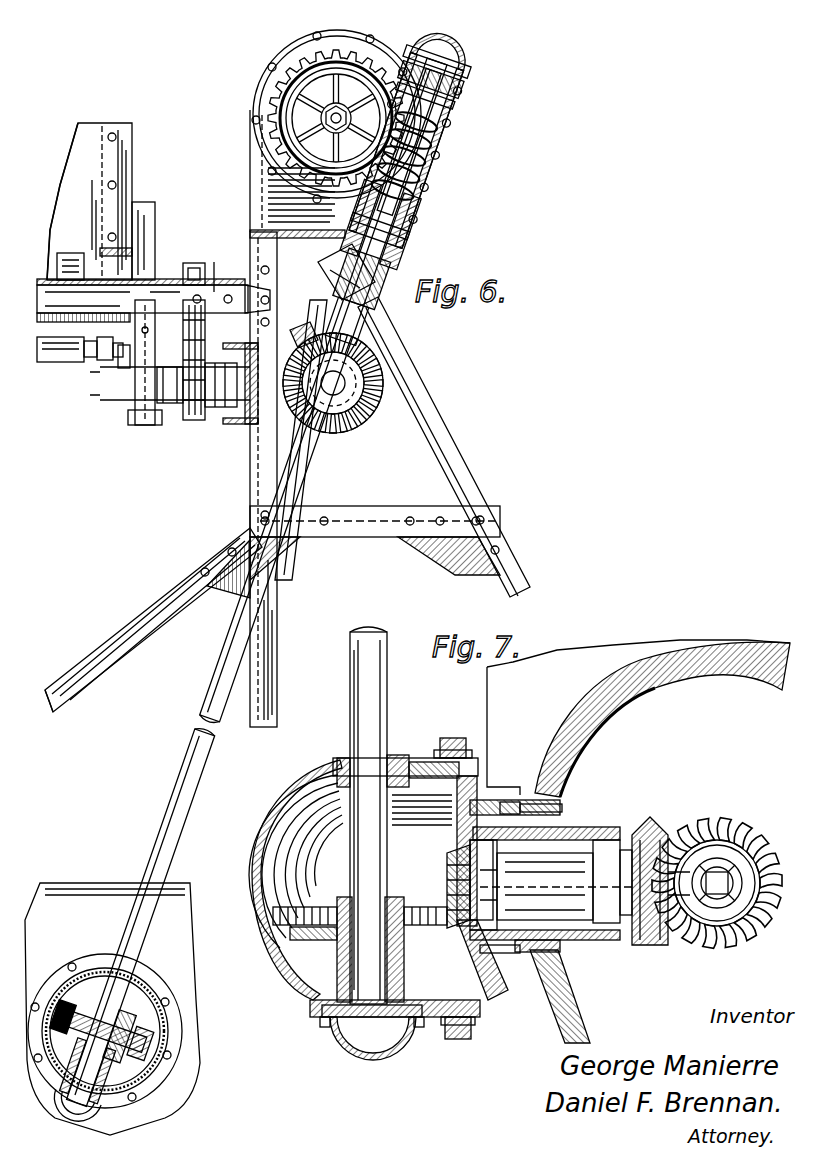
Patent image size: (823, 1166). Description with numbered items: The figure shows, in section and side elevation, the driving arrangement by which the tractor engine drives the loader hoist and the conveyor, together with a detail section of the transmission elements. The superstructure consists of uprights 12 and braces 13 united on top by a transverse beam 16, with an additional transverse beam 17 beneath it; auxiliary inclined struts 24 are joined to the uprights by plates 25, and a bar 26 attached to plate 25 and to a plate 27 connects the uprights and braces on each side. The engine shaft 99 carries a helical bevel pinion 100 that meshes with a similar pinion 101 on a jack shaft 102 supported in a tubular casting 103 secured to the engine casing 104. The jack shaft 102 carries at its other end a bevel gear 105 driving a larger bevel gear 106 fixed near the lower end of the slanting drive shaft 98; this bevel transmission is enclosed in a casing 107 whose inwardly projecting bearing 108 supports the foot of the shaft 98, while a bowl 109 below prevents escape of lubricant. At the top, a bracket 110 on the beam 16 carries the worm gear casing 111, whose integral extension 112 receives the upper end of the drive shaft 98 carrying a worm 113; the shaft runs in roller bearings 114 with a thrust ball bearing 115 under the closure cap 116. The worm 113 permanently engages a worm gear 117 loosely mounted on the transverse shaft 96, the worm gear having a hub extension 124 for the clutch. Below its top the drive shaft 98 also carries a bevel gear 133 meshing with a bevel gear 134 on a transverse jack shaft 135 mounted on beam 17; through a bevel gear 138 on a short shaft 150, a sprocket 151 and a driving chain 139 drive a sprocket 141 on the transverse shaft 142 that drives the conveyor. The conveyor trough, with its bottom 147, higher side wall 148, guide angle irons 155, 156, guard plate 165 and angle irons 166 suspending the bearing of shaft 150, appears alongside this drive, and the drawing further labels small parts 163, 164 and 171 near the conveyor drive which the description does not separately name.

In FIG. 6, the uprights 12 is at (250, 507).
In FIG. 6, the braces 13 is at (522, 586).
In FIG. 6, the transverse beam 16 is at (322, 234).
In FIG. 6, the transverse beam 17 is at (240, 426).
In FIG. 6, the inclined struts 24 is at (153, 630).
In FIG. 6, the plate 25 is at (288, 550).
In FIG. 6, the bar 26 is at (362, 538).
In FIG. 6, the plate 27 is at (434, 540).
In FIG. 6, the transverse shaft 96 is at (348, 104).
In FIG. 6, the drive shaft 98 is at (176, 792).
In FIG. 7, the drive shaft 98 is at (350, 727).
In FIG. 7, the engine shaft 99 is at (720, 828).
In FIG. 7, the helical bevel pinion 100 is at (700, 840).
In FIG. 7, the pinion 101 is at (661, 863).
In FIG. 7, the jack shaft 102 is at (578, 833).
In FIG. 7, the tubular casting 103 is at (596, 835).
In FIG. 7, the engine casing 104 is at (562, 806).
In FIG. 6, the bevel gear 105 is at (115, 1038).
In FIG. 7, the bevel gear 105 is at (450, 865).
In FIG. 6, the bevel gear 106 is at (118, 1057).
In FIG. 7, the bevel gear 106 is at (440, 905).
In FIG. 6, the casing 107 is at (168, 1034).
In FIG. 7, the casing 107 is at (278, 964).
In FIG. 6, the bearing 108 is at (130, 1082).
In FIG. 7, the bearing 108 is at (338, 968).
In FIG. 6, the bowl 109 is at (82, 1117).
In FIG. 7, the bowl 109 is at (333, 1037).
In FIG. 6, the bracket 110 is at (250, 180).
In FIG. 6, the worm gear casing 111 is at (262, 155).
In FIG. 6, the extension 112 is at (452, 148).
In FIG. 6, the worm 113 is at (440, 163).
In FIG. 6, the roller bearings 114 is at (466, 92).
In FIG. 6, the thrust ball bearing 115 is at (472, 72).
In FIG. 6, the closure cap 116 is at (458, 42).
In FIG. 6, the worm gear 117 is at (265, 94).
In FIG. 6, the hub extension 124 is at (290, 126).
In FIG. 6, the bevel gear 133 is at (372, 350).
In FIG. 6, the bevel gear 134 is at (384, 368).
In FIG. 6, the jack shaft 135 is at (393, 386).
In FIG. 6, the bevel gear 138 is at (303, 333).
In FIG. 6, the driving chain 139 is at (186, 420).
In FIG. 6, the sprocket 141 is at (235, 276).
In FIG. 6, the transverse shaft 142 is at (168, 366).
In FIG. 6, the bottom 147 is at (55, 287).
In FIG. 6, the side wall 148 is at (133, 160).
In FIG. 6, the short shaft 150 is at (220, 408).
In FIG. 6, the sprocket 151 is at (172, 405).
In FIG. 6, the angle iron 155 is at (108, 251).
In FIG. 6, the angle iron 156 is at (140, 282).
In FIG. 6, the nut 163 is at (90, 350).
In FIG. 6, the clamp 164 is at (53, 316).
In FIG. 6, the guard plate 165 is at (73, 165).
In FIG. 6, the angle irons 166 is at (135, 405).
In FIG. 6, the pin 171 is at (121, 368).